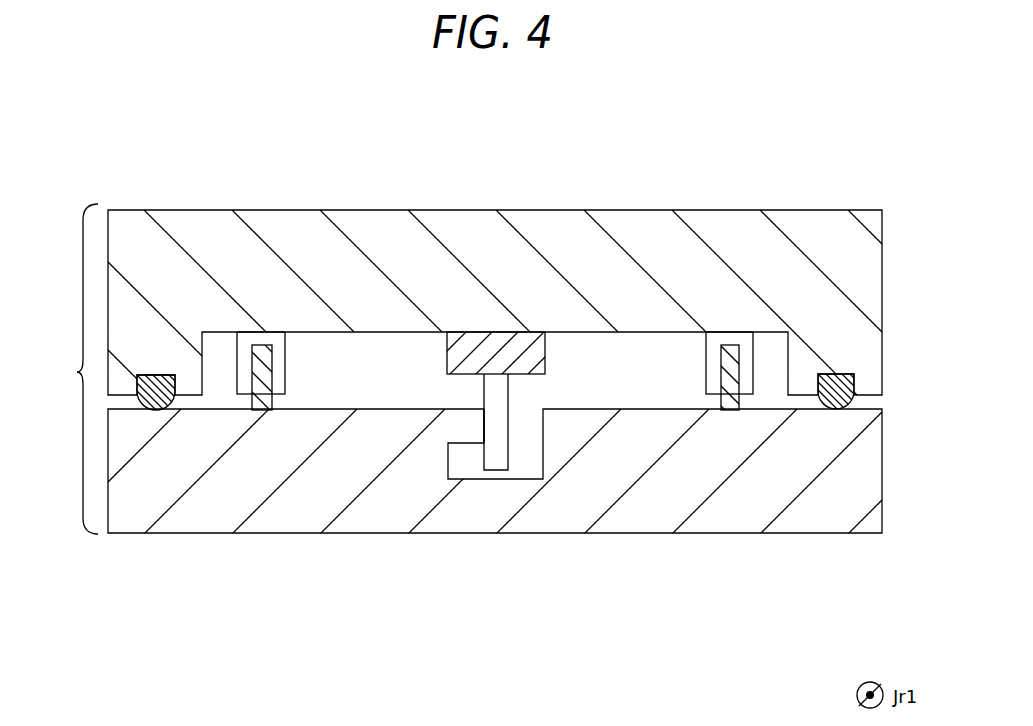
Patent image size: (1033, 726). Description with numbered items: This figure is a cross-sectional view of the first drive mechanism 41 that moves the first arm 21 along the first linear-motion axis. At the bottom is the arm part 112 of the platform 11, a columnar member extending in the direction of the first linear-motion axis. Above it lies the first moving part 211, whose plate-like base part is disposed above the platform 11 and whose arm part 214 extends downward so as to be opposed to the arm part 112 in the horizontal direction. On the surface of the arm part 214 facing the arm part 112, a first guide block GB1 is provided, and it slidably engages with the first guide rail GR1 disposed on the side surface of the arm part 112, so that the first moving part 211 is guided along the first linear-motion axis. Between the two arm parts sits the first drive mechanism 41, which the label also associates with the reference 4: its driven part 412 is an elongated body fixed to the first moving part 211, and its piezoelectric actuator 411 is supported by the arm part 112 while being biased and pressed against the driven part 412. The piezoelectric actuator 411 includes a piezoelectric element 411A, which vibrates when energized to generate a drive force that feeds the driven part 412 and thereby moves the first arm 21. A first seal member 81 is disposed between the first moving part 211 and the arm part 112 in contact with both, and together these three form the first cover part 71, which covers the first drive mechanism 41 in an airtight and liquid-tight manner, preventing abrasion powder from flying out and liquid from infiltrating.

The first arm 21 is at (516, 246).
The arm part 214 is at (516, 265).
The first moving part 211 is at (540, 238).
The platform 11 is at (536, 498).
The arm part 112 is at (493, 508).
The first drive mechanism 41 is at (474, 406).
The positioning structure 4 is at (496, 406).
The driven part 412 is at (483, 350).
The piezoelectric actuator 411 is at (498, 443).
The piezoelectric element 411A is at (500, 412).
The first guide block GB1 is at (261, 345).
The first guide rail GR1 is at (262, 400).
The first seal member 81 is at (836, 388).
The first cover part 71 is at (73, 369).